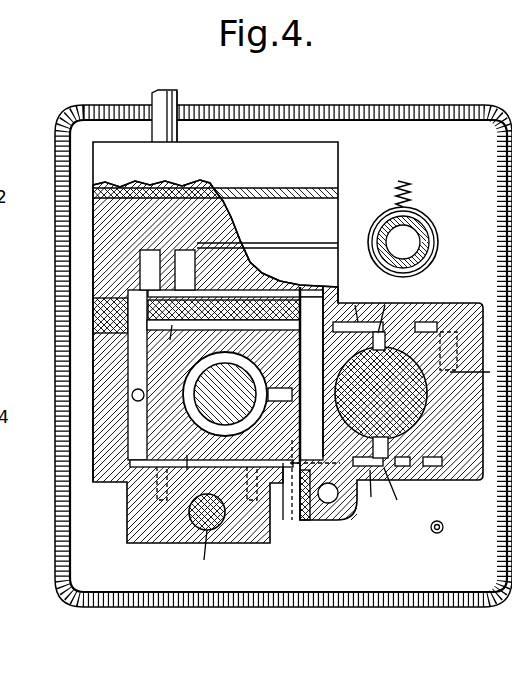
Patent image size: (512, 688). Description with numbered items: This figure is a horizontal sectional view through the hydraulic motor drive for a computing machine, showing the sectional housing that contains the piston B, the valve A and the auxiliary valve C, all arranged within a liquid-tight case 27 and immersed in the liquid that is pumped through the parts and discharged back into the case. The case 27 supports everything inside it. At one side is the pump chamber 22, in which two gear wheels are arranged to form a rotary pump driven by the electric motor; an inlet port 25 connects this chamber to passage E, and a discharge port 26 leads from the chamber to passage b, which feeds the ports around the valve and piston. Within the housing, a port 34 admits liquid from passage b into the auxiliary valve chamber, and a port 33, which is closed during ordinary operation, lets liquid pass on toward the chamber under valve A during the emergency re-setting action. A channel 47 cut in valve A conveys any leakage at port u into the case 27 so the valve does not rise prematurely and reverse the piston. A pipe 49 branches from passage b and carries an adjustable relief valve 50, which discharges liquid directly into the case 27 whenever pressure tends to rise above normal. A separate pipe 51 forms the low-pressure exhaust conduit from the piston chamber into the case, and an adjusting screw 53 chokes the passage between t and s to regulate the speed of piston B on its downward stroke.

The liquid-tight case 27 is at (307, 108).
The pump chamber 22 is at (143, 221).
The discharge port 26 is at (150, 270).
The inlet port 25 is at (185, 270).
The channel 47 is at (236, 367).
The pipe 49 is at (438, 248).
The adjustable relief valve 50 is at (418, 211).
The port 33 is at (259, 360).
The port 34 is at (272, 490).
The adjusting screw 53 is at (305, 521).
The pipe 51 is at (439, 534).